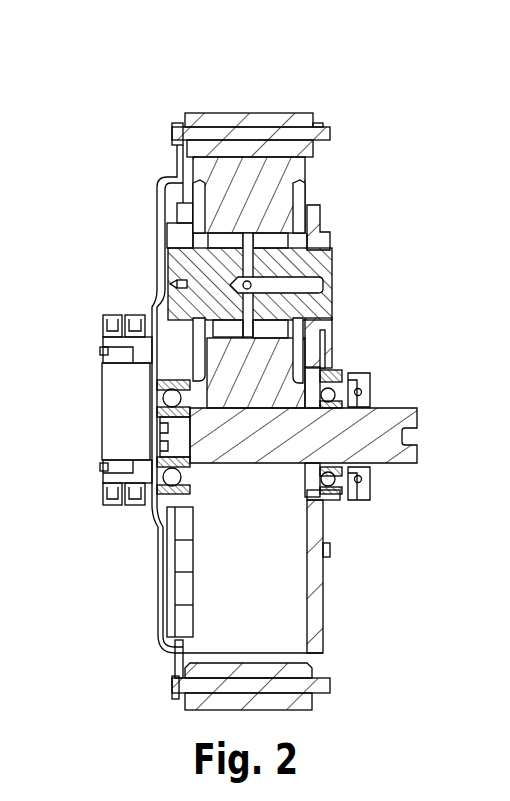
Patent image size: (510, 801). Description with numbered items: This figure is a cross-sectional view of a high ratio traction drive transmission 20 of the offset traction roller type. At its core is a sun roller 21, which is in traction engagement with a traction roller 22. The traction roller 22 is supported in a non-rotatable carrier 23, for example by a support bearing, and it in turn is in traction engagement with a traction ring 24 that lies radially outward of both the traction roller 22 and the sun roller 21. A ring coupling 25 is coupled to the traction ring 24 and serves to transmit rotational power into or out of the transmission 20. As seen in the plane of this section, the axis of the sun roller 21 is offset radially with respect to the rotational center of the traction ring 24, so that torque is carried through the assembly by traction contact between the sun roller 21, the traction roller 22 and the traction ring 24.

The high ratio traction drive transmission 20 is at (186, 78).
The sun roller 21 is at (393, 408).
The traction roller 22 is at (305, 187).
The carrier 23 is at (330, 237).
The traction ring 24 is at (297, 112).
The ring coupling 25 is at (100, 355).